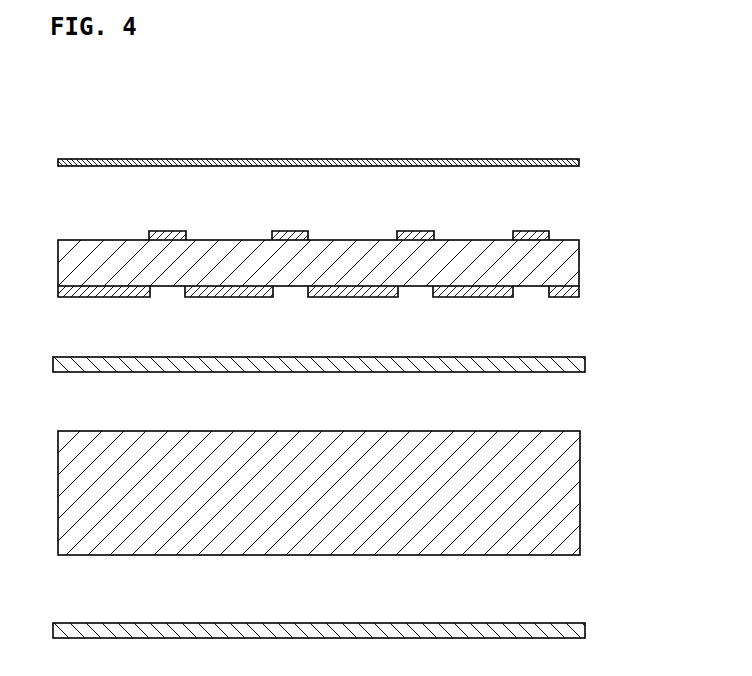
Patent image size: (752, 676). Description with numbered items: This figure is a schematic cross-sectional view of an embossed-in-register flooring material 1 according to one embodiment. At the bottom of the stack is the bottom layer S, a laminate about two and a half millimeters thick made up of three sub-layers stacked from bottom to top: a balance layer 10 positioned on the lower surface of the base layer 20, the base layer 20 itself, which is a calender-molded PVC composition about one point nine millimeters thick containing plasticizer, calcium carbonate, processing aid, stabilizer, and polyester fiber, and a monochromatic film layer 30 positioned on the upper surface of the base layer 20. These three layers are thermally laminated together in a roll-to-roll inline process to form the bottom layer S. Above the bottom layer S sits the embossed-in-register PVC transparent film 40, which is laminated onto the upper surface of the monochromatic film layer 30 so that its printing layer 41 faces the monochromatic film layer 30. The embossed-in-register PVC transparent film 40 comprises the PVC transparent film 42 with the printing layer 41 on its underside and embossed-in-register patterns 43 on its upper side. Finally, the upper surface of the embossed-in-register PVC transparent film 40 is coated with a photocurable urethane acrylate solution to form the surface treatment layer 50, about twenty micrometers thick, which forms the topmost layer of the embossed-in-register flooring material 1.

The embossed-in-register flooring material 1 is at (233, 126).
The balance layer 10 is at (353, 632).
The base layer 20 is at (580, 490).
The monochromatic film layer 30 is at (585, 362).
The embossed-in-register PVC transparent film 40 is at (368, 260).
The printing layer 41 is at (358, 297).
The PVC transparent film 42 is at (579, 255).
The embossed-in-register patterns 43 is at (549, 231).
The surface treatment layer 50 is at (579, 162).
The bottom layer S is at (356, 497).